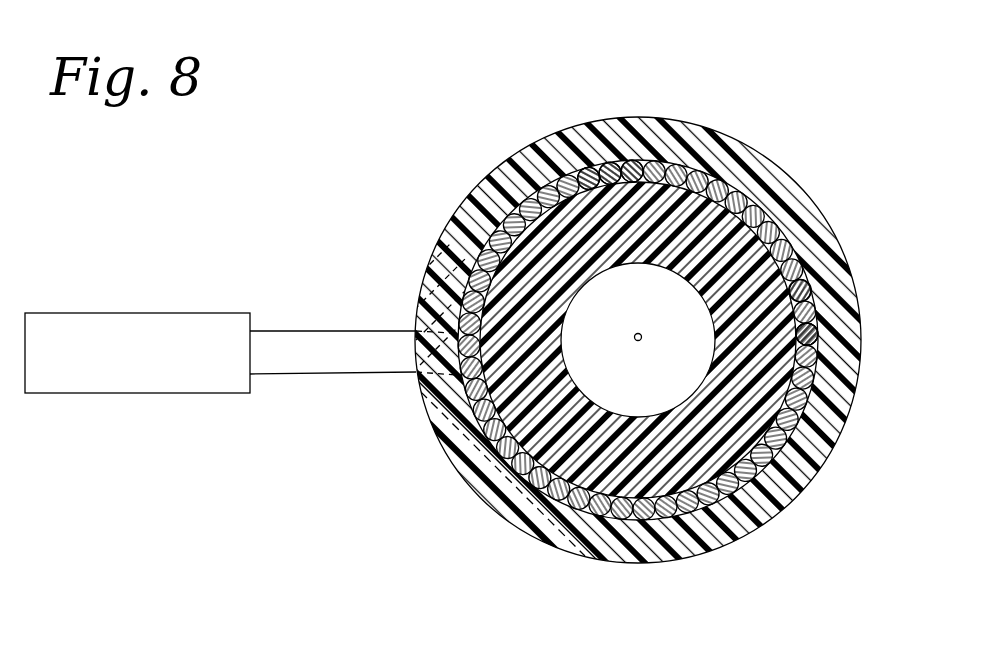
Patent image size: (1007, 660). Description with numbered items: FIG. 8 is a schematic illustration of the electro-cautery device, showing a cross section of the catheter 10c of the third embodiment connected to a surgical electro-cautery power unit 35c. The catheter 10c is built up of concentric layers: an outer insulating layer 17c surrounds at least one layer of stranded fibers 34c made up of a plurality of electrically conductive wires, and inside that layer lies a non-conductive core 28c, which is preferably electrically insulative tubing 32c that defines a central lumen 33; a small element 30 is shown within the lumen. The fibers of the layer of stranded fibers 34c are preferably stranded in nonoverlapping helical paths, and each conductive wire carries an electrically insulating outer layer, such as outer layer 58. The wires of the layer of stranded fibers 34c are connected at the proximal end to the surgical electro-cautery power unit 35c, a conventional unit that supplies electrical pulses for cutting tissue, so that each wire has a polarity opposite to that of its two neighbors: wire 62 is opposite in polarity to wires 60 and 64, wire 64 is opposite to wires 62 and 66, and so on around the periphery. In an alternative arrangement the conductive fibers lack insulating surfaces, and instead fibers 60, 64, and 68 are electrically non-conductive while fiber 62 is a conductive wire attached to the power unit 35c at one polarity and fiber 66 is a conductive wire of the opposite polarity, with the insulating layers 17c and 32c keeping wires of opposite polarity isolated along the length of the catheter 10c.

The catheter 10c is at (806, 168).
The outer insulating layer 17c is at (491, 500).
The non-conductive core 28c is at (720, 437).
The guidewire 30 is at (642, 337).
The electrically insulative tubing 32c is at (767, 302).
The central lumen 33 is at (651, 377).
The layer of stranded fibers 34c is at (820, 405).
The surgical electro-cautery power unit 35c is at (108, 312).
The outer layer 58 is at (520, 442).
The wire 60 is at (585, 168).
The wire 62 is at (612, 170).
The wire 64 is at (630, 170).
The wire 66 is at (663, 170).
The fiber 68 is at (687, 177).